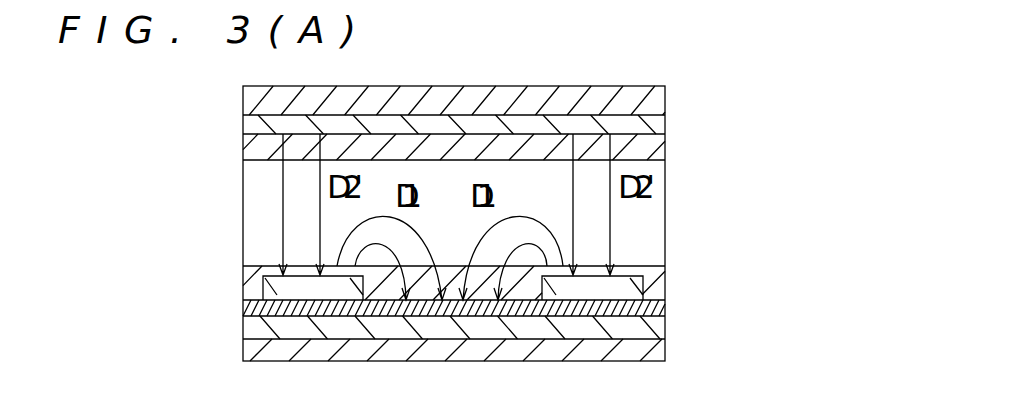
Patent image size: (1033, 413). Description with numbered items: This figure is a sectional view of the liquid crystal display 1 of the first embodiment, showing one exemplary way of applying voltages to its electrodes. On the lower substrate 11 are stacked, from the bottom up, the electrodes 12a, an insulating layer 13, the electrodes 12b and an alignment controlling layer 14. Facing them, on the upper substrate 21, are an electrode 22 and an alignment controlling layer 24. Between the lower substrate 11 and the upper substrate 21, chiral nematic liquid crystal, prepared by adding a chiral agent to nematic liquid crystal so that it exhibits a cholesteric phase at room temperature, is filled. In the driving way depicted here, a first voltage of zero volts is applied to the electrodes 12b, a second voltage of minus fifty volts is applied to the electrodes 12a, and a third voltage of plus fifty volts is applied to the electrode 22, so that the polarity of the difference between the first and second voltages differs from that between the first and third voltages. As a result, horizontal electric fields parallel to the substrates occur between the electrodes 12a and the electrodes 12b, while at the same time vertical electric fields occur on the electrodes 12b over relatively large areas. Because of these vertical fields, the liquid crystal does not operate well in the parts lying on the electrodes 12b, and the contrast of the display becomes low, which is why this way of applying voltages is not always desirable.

The liquid crystal display 1 is at (589, 44).
The lower substrate 11 is at (650, 350).
The electrodes 12a is at (655, 325).
The electrodes 12b is at (653, 285).
The insulating layer 13 is at (660, 305).
The alignment controlling layer 14 is at (625, 267).
The upper substrate 21 is at (660, 97).
The electrode 22 is at (655, 121).
The alignment controlling layer 24 is at (650, 141).